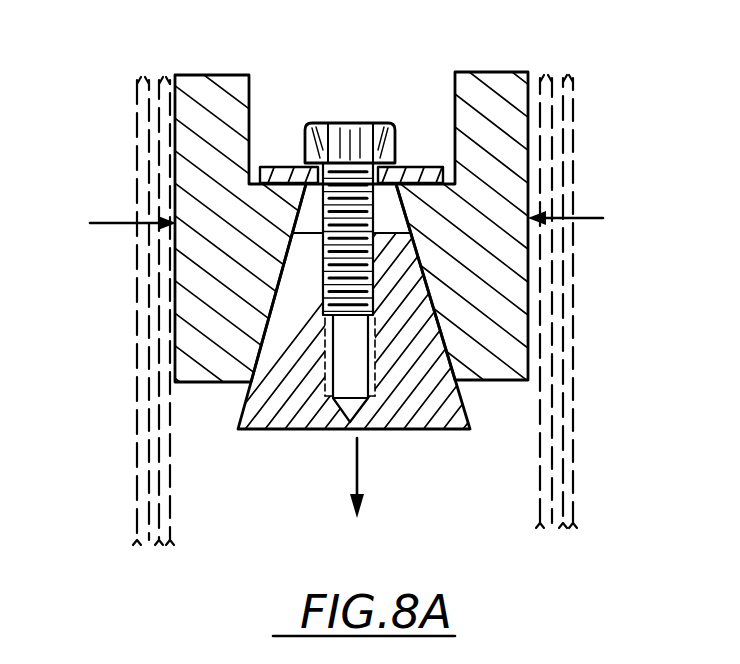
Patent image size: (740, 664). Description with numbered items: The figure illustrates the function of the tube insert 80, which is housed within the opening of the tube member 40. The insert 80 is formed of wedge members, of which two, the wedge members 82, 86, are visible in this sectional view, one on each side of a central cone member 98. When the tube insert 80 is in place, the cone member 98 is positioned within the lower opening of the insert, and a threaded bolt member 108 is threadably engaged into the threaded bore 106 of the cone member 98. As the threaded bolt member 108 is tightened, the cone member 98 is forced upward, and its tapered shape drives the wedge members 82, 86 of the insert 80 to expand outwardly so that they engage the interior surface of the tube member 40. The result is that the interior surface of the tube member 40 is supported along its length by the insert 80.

The tube insert 80 is at (505, 46).
The wedge member 82 is at (218, 110).
The wedge member 86 is at (512, 172).
The cone member 98 is at (262, 400).
The threaded bore 106 is at (322, 262).
The threaded bolt member 108 is at (360, 126).
The tube member 40 is at (548, 445).